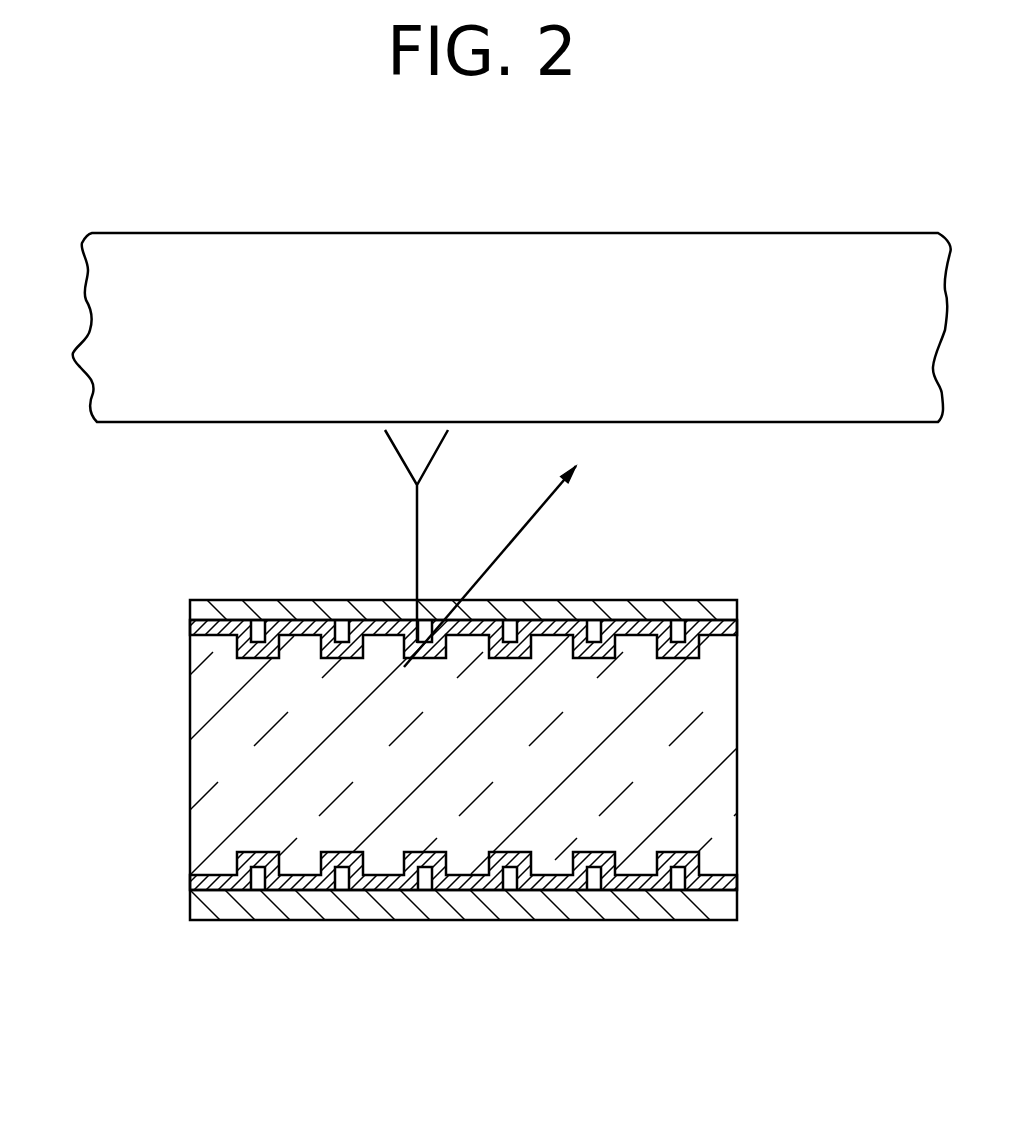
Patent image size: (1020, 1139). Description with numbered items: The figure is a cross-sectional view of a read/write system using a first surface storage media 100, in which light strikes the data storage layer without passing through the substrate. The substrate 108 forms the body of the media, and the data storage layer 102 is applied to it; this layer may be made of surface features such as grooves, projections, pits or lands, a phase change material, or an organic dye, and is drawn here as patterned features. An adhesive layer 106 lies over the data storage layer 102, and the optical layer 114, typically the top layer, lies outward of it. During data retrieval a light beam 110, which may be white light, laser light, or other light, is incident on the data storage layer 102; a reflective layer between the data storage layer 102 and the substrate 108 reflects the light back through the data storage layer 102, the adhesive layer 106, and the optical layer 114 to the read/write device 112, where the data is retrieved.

The display assembly 100 is at (177, 973).
The data storage layer 102 is at (738, 643).
The adhesive layer 106 is at (738, 621).
The substrate 108 is at (738, 770).
The light beam 110 is at (417, 512).
The read/write device 112 is at (640, 343).
The optical layer 114 is at (190, 616).